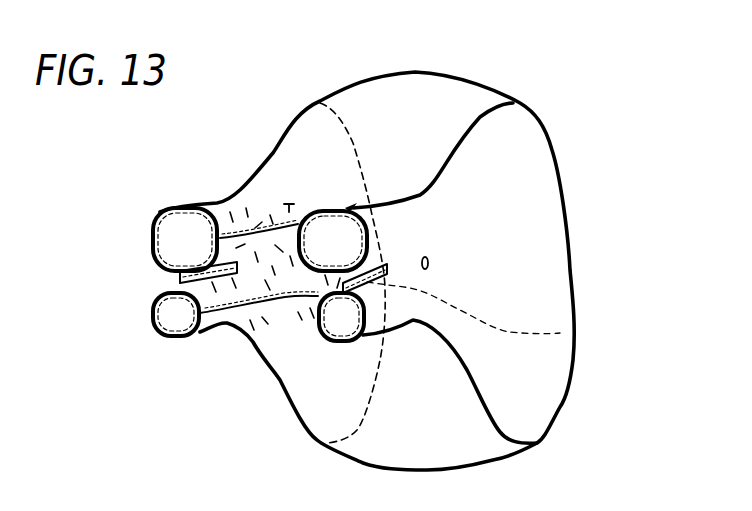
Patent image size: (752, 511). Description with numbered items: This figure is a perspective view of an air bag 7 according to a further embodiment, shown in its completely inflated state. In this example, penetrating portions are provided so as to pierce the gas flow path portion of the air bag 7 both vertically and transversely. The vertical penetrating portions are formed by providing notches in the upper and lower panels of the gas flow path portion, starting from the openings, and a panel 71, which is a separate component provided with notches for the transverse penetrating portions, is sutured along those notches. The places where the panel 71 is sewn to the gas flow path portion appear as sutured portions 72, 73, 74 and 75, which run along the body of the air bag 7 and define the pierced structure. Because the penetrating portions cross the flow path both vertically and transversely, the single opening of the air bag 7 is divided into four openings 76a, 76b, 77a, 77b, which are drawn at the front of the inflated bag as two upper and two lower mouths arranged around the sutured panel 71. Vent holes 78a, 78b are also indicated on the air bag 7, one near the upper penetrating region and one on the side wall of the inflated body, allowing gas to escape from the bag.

The air bag 7 is at (575, 125).
The panel 71 is at (302, 272).
The sutured portion 72 is at (243, 235).
The sutured portion 73 is at (250, 300).
The sutured portion 74 is at (180, 283).
The sutured portion 75 is at (560, 333).
The opening 76a is at (182, 240).
The opening 76b is at (335, 240).
The opening 77a is at (177, 315).
The opening 77b is at (323, 342).
The vent hole 78a is at (265, 215).
The vent hole 78b is at (429, 261).